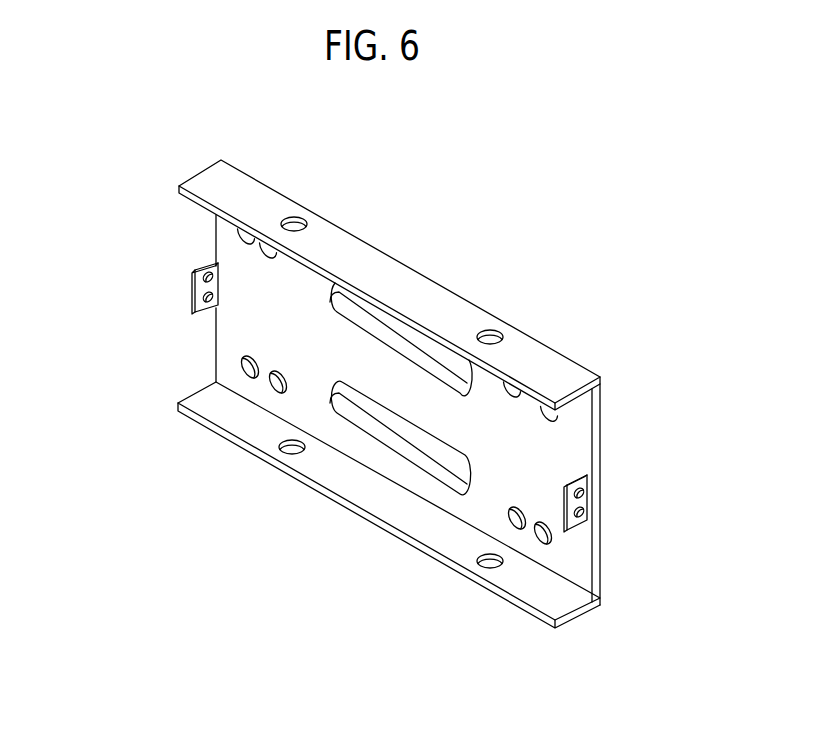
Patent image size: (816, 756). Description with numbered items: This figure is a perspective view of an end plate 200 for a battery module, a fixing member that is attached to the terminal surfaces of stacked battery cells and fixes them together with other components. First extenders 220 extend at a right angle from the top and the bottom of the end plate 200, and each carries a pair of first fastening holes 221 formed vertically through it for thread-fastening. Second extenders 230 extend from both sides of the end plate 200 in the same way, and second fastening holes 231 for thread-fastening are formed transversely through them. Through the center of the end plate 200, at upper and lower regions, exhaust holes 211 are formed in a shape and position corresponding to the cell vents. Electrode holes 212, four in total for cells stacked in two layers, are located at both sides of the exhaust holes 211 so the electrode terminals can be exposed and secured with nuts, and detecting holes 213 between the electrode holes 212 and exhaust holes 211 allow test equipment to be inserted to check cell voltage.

The end plate 200 is at (113, 150).
The exhaust hole 211 is at (462, 378).
The electrode hole 212 is at (241, 236).
The detecting hole 213 is at (269, 252).
The first extender 220 is at (398, 270).
The first fastening hole 221 is at (296, 220).
The second extender 230 is at (194, 290).
The second fastening hole 231 is at (207, 273).